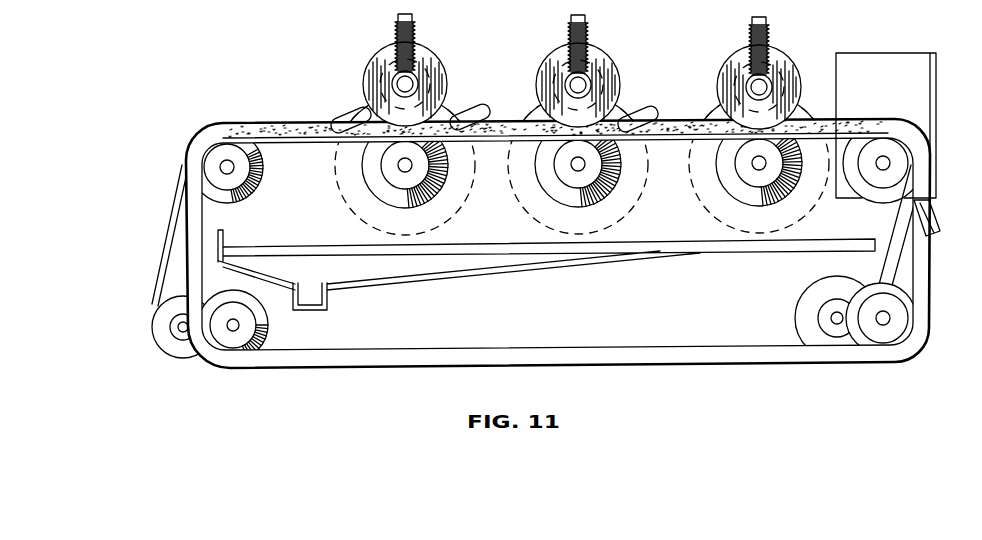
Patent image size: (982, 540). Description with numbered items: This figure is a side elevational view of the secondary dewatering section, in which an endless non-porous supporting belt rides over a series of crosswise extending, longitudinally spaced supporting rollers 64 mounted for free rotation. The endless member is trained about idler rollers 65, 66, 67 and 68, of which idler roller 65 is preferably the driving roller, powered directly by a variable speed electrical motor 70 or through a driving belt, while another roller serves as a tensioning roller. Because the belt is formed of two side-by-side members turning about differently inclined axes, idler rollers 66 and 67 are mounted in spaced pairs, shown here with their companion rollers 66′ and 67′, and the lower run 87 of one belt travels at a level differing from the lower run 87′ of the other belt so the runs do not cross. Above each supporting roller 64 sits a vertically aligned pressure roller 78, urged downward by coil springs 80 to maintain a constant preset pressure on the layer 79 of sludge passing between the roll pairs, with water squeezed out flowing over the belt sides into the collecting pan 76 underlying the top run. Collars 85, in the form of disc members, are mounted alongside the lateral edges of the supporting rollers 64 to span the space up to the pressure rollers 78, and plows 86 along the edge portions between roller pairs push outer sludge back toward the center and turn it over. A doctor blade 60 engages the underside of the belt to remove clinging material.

The doctor blade 60 is at (936, 217).
The supporting rollers 64 is at (383, 165).
The idler roller 65 is at (898, 163).
The idler roller 66 is at (902, 320).
The idler pulley 66′ is at (831, 347).
The idler roller 67 is at (258, 330).
The idler pulley 67′ is at (168, 326).
The idler roller 68 is at (217, 159).
The variable speed electrical motor 70 is at (917, 78).
The collecting pan 76 is at (627, 250).
The pressure rollers 78 is at (445, 89).
The layer of sludge 79 is at (279, 132).
The coil springs 80 is at (415, 23).
The collars 85 is at (372, 211).
The plows 86 is at (358, 110).
The lower run 87 is at (677, 369).
The lower run 87′ is at (731, 308).